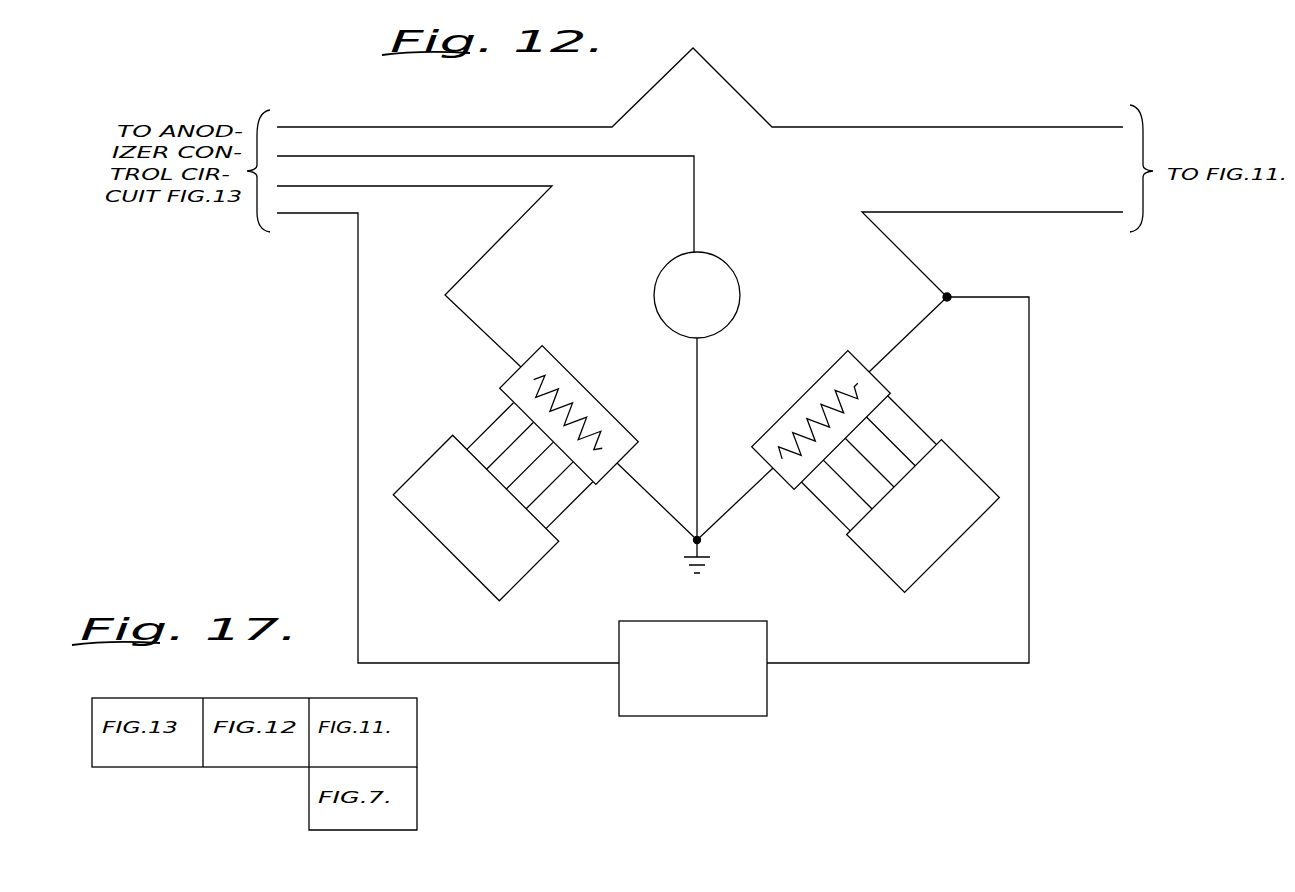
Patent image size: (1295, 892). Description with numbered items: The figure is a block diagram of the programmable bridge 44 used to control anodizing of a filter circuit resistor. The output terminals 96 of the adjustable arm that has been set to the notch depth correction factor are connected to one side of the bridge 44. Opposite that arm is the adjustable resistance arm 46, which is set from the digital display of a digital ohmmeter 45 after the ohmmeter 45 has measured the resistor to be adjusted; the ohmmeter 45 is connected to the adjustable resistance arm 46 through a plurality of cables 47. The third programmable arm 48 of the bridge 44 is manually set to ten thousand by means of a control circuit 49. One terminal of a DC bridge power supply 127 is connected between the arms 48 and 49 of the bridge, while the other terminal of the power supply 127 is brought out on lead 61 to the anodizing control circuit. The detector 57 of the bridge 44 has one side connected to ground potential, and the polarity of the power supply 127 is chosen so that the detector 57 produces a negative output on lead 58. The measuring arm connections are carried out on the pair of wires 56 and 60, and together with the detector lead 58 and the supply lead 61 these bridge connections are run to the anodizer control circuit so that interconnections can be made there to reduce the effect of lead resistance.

The programmable bridge 44 is at (949, 283).
The digital ohmmeter 45 is at (500, 598).
The adjustable resistance arm 46 is at (498, 388).
The cables 47 is at (497, 428).
The third programmable arm 48 is at (889, 389).
The control circuit 49 is at (920, 578).
The wire 56 is at (305, 129).
The detector 57 is at (741, 298).
The lead 58 is at (320, 150).
The wire 60 is at (320, 181).
The lead 61 is at (290, 216).
The output terminals 96 is at (1087, 120).
The bridge power supply 127 is at (767, 623).